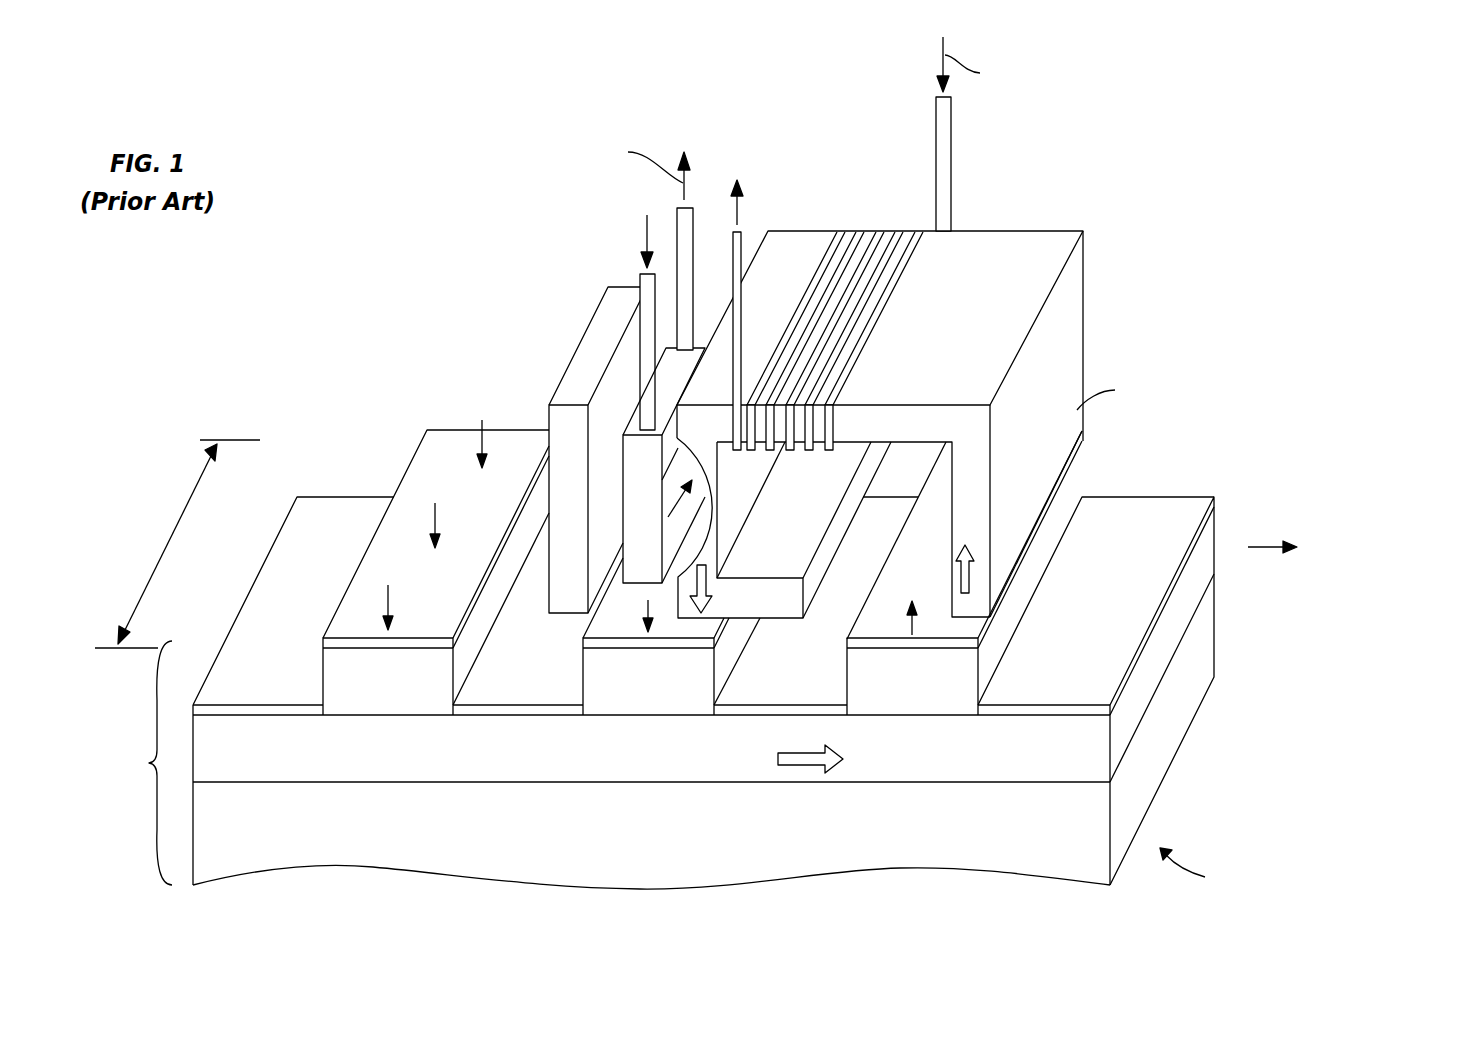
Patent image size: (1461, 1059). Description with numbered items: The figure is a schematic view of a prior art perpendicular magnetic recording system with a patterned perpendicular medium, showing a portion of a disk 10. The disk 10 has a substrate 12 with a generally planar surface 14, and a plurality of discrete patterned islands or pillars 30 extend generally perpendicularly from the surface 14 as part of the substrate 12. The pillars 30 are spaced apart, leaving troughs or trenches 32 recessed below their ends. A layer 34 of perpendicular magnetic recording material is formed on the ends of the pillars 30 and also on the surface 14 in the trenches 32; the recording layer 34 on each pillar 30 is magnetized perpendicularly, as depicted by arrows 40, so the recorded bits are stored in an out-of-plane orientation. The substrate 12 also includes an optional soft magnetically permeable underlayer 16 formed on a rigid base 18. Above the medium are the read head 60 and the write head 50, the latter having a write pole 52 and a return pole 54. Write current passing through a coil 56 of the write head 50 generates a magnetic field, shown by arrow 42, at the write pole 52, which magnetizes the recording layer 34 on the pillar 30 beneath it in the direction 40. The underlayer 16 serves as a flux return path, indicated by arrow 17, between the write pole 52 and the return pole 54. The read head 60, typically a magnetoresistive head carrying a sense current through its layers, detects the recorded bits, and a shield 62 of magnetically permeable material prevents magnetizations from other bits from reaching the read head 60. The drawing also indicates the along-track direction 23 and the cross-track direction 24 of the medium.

The disk 10 is at (1201, 871).
The substrate 12 is at (663, 691).
The generally planar surface 14 is at (388, 718).
The soft underlayer 16 is at (1082, 742).
The flux return path arrow 17 is at (795, 762).
The base 18 is at (1018, 865).
The along-track direction 23 is at (1293, 519).
The cross-track direction 24 is at (207, 447).
The pillars 30 is at (335, 683).
The trenches 32 is at (327, 513).
The perpendicular magnetic recording layer 34 is at (333, 645).
The magnetization arrows 40 is at (472, 433).
The magnetic field arrow 42 is at (970, 586).
The write head 50 is at (1043, 243).
The write pole 52 is at (1065, 345).
The return pole 54 is at (848, 453).
The coil 56 is at (840, 242).
The read head 60 is at (633, 448).
The shield 62 is at (553, 427).